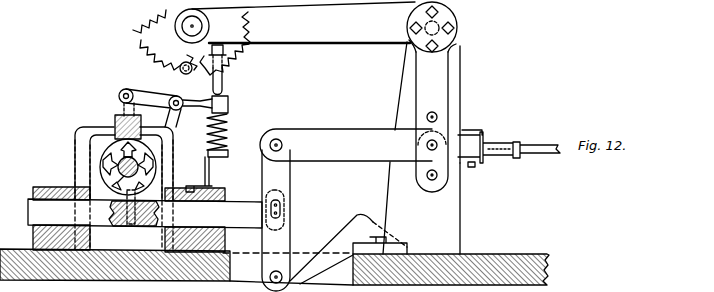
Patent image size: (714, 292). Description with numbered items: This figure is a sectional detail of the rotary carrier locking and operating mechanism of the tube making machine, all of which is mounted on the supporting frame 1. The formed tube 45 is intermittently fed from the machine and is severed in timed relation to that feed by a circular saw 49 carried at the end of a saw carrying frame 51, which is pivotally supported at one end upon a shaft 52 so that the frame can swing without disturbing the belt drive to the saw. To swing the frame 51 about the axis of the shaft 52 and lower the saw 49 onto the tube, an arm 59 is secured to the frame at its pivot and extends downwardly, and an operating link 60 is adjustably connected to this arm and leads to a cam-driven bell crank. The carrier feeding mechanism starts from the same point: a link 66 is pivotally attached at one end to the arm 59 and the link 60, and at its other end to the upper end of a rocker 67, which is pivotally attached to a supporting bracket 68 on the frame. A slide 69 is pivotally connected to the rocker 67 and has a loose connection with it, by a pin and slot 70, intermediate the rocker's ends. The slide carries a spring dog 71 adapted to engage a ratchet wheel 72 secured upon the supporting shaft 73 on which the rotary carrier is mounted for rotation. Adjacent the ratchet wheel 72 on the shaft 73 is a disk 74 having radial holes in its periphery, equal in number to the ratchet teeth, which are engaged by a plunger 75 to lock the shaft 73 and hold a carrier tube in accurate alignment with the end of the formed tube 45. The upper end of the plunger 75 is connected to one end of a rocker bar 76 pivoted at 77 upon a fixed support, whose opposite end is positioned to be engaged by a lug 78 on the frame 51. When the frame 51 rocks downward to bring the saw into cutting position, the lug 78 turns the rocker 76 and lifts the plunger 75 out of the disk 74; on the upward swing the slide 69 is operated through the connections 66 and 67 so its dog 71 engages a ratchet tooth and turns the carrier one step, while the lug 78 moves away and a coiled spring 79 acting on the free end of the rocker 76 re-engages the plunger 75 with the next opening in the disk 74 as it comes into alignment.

The supporting frame 1 is at (493, 255).
The formed tube 45 is at (180, 64).
The circular saw 49 is at (148, 31).
The saw carrying frame 51 is at (337, 46).
The shaft 52 is at (460, 18).
The arm 59 is at (440, 72).
The operating link 60 is at (537, 140).
The link 66 is at (346, 145).
The rocker 67 is at (283, 172).
The supporting bracket 68 is at (315, 249).
The slide 69 is at (236, 203).
The pin and slot 70 is at (288, 209).
The spring dog 71 is at (134, 219).
The ratchet wheel 72 is at (100, 159).
The supporting shaft 73 is at (118, 170).
The disk 74 is at (147, 152).
The plunger 75 is at (121, 106).
The rocker bar 76 is at (151, 96).
The pivot 77 is at (205, 96).
The lug 78 is at (224, 80).
The coiled spring 79 is at (226, 130).